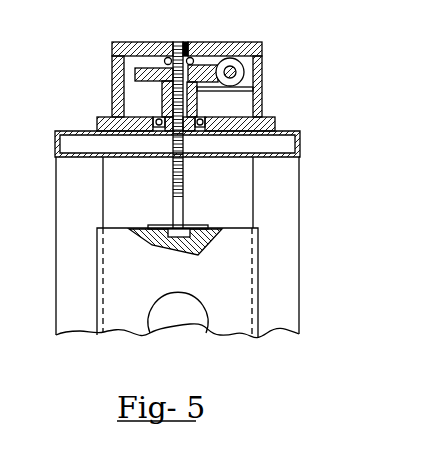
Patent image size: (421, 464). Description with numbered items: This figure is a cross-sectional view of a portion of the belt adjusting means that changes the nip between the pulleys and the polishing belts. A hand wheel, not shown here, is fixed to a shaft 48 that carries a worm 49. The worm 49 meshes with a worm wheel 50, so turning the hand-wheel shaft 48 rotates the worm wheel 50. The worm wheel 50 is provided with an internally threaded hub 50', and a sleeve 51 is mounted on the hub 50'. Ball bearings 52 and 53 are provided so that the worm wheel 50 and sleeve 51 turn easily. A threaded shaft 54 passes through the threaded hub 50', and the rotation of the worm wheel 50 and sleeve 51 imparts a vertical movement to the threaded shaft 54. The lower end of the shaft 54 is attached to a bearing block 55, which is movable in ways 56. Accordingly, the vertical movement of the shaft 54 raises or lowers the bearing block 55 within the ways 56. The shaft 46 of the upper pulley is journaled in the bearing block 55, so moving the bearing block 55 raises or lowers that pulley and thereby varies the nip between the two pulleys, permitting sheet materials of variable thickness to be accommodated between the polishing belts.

The shaft 46 is at (197, 313).
The shaft 48 is at (235, 76).
The worm 49 is at (243, 70).
The worm wheel 50 is at (152, 46).
The internally threaded hub 50' is at (219, 48).
The sleeve 51 is at (162, 107).
The ball bearing 52 is at (187, 42).
The ball bearing 53 is at (203, 118).
The shaft 54 is at (187, 177).
The bearing block 55 is at (120, 320).
The ways 56 is at (285, 217).